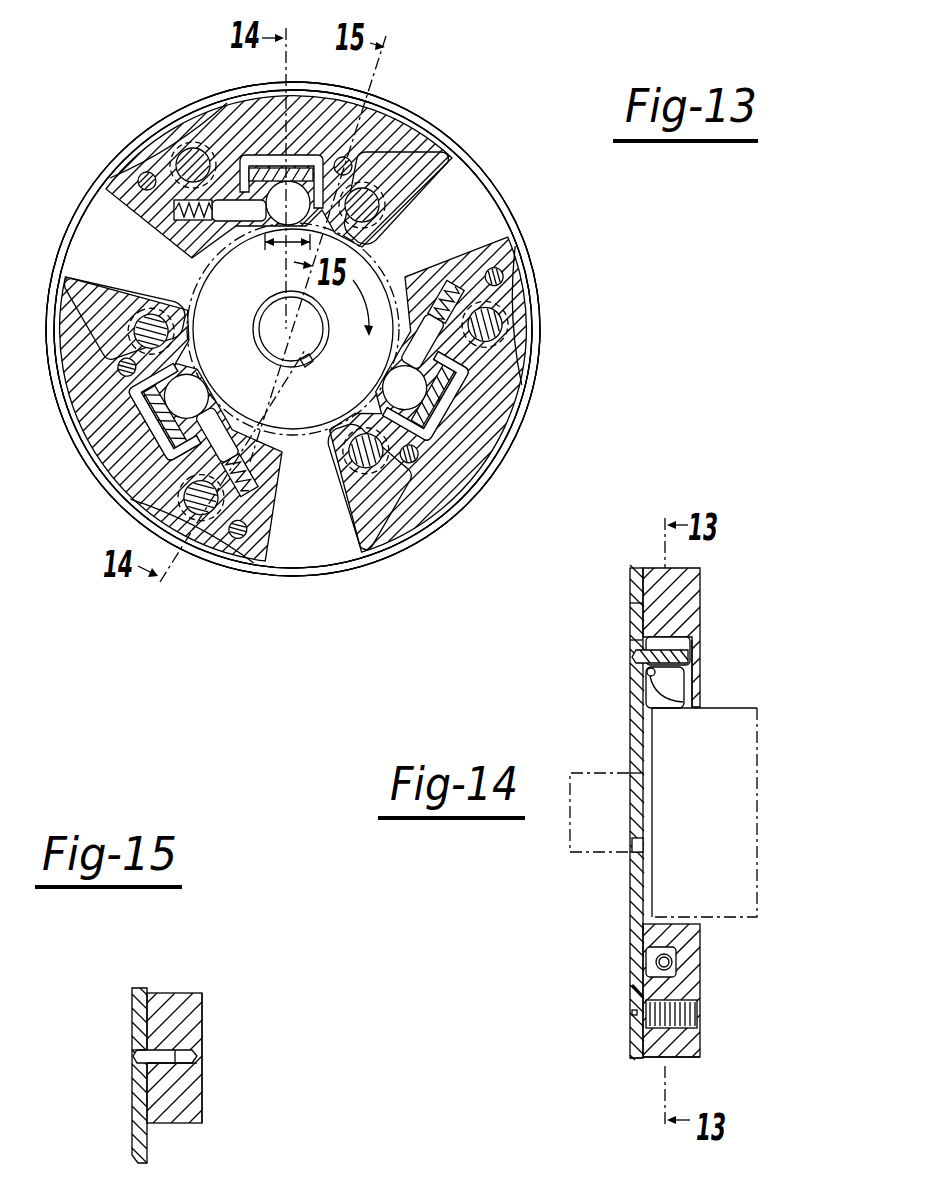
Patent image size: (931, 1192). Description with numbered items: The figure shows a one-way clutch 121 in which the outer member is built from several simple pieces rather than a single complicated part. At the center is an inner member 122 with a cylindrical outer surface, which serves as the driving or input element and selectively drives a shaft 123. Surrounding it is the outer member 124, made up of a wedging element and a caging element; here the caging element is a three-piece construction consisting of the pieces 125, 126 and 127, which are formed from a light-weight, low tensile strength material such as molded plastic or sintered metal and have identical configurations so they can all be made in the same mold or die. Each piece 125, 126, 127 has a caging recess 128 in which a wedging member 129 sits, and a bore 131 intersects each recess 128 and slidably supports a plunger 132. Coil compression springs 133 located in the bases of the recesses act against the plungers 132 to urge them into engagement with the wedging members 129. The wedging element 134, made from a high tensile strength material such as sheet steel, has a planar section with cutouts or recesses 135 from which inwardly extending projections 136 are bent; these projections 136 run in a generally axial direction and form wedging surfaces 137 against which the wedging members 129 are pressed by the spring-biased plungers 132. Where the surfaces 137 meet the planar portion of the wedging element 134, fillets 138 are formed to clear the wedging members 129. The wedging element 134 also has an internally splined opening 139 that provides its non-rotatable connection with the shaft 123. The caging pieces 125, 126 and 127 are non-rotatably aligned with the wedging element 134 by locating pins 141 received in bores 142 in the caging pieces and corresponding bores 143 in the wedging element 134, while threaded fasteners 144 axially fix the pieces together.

In FIG. 13, the one-way clutch 121 is at (278, 586).
In FIG. 14, the one-way clutch 121 is at (638, 1103).
In FIG. 13, the inner member 122 is at (296, 445).
In FIG. 14, the inner member 122 is at (754, 706).
In FIG. 14, the shaft 123 is at (600, 855).
In FIG. 13, the outer member 124 is at (420, 538).
In FIG. 14, the outer member 124 is at (700, 1065).
In FIG. 15, the outer member 124 is at (212, 1011).
In FIG. 13, the caging element piece 125 is at (402, 112).
In FIG. 14, the caging element piece 125 is at (692, 570).
In FIG. 15, the caging element piece 125 is at (177, 993).
In FIG. 13, the caging element piece 126 is at (455, 505).
In FIG. 13, the caging element piece 127 is at (55, 300).
In FIG. 14, the caging element piece 127 is at (700, 1040).
In FIG. 13, the caging recess 128 is at (238, 163).
In FIG. 14, the caging recess 128 is at (642, 652).
In FIG. 13, the wedging member 129 is at (197, 380).
In FIG. 14, the wedging member 129 is at (697, 683).
In FIG. 13, the bore 131 is at (214, 222).
In FIG. 14, the bore 131 is at (648, 970).
In FIG. 13, the plunger 132 is at (220, 250).
In FIG. 13, the coil compression spring 133 is at (172, 210).
In FIG. 14, the coil compression spring 133 is at (675, 957).
In FIG. 13, the wedging element 134 is at (320, 582).
In FIG. 14, the wedging element 134 is at (638, 1060).
In FIG. 15, the wedging element 134 is at (140, 988).
In FIG. 13, the cutout 135 is at (455, 392).
In FIG. 14, the cutout 135 is at (640, 605).
In FIG. 13, the projection 136 is at (262, 167).
In FIG. 14, the projection 136 is at (690, 640).
In FIG. 13, the wedging surface 137 is at (437, 447).
In FIG. 14, the wedging surface 137 is at (652, 690).
In FIG. 14, the fillet 138 is at (647, 672).
In FIG. 13, the internally splined opening 139 is at (291, 367).
In FIG. 14, the internally splined opening 139 is at (632, 818).
In FIG. 13, the locating pin 141 is at (352, 160).
In FIG. 15, the locating pin 141 is at (177, 1045).
In FIG. 15, the bore 142 is at (187, 1063).
In FIG. 15, the bore 143 is at (140, 1073).
In FIG. 13, the threaded fastener 144 is at (143, 318).
In FIG. 14, the threaded fastener 144 is at (632, 1030).